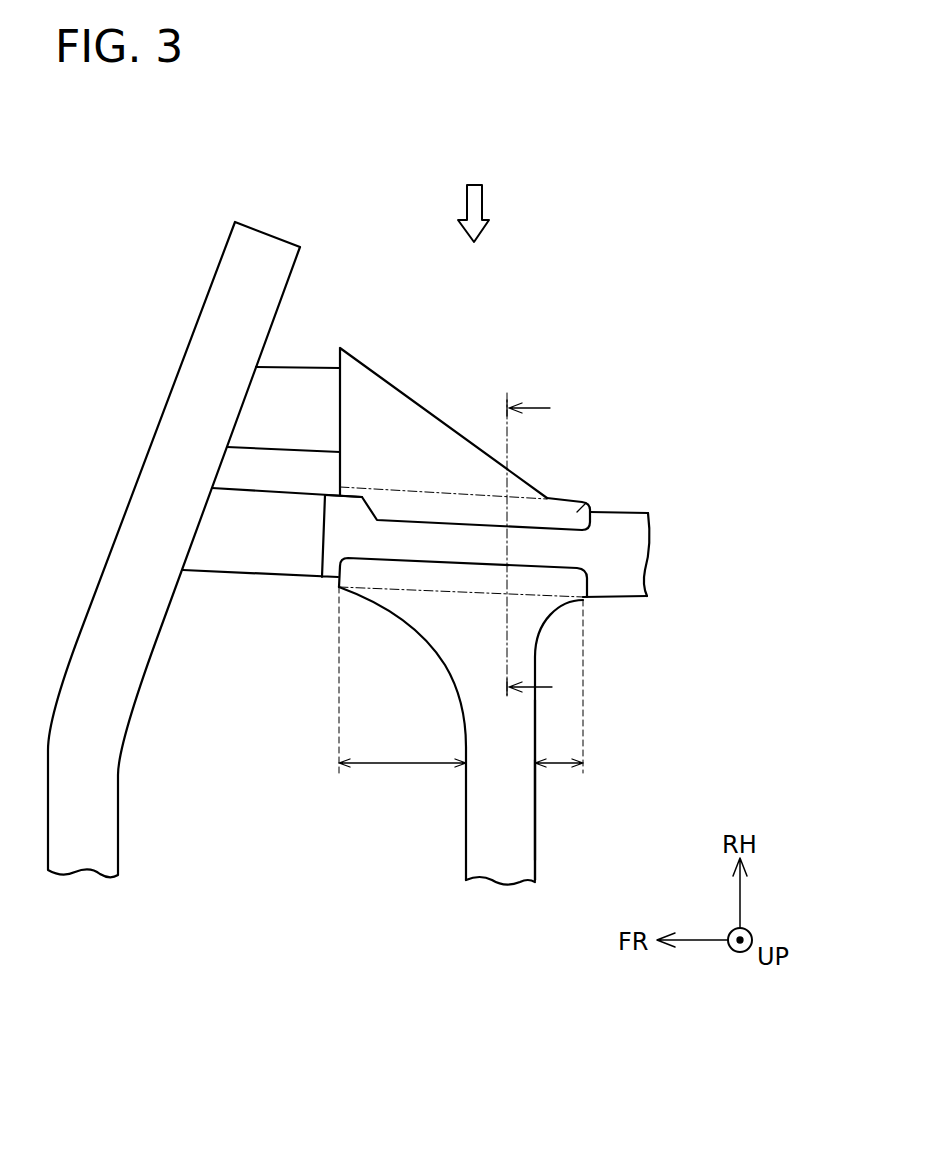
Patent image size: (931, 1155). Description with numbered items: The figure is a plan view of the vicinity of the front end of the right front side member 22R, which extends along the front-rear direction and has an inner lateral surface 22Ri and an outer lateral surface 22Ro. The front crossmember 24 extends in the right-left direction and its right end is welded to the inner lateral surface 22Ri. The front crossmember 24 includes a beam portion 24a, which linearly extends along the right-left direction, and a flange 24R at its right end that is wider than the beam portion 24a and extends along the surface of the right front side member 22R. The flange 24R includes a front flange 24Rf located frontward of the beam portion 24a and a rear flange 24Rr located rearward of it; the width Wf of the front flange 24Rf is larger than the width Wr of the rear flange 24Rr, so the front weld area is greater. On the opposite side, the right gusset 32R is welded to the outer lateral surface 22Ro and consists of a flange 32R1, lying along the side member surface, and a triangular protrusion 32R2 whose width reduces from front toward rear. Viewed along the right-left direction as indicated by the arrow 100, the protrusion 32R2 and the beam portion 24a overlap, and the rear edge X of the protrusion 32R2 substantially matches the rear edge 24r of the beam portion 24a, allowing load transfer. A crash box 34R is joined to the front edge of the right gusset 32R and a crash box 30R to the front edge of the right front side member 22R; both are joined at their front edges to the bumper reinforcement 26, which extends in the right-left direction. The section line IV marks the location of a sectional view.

The bumper reinforcement 26 is at (165, 458).
The crash box 34R is at (297, 383).
The crash box 30R is at (228, 557).
The right gusset 32R is at (483, 415).
The flange 32R1 is at (598, 538).
The protrusion 32R2 is at (443, 417).
The right front side member 22R is at (683, 516).
The outer lateral surface 22Ro is at (622, 511).
The inner lateral surface 22Ri is at (617, 597).
The rear edge X is at (551, 497).
The front crossmember 24 is at (459, 804).
The flange 24R is at (445, 783).
The front flange 24Rf is at (353, 571).
The rear flange 24Rr is at (570, 580).
The beam portion 24a is at (525, 856).
The rear edge 24r is at (537, 843).
The width Wf is at (402, 692).
The width Wr is at (559, 699).
The section line IV is at (544, 547).
The arrow 100 is at (483, 202).